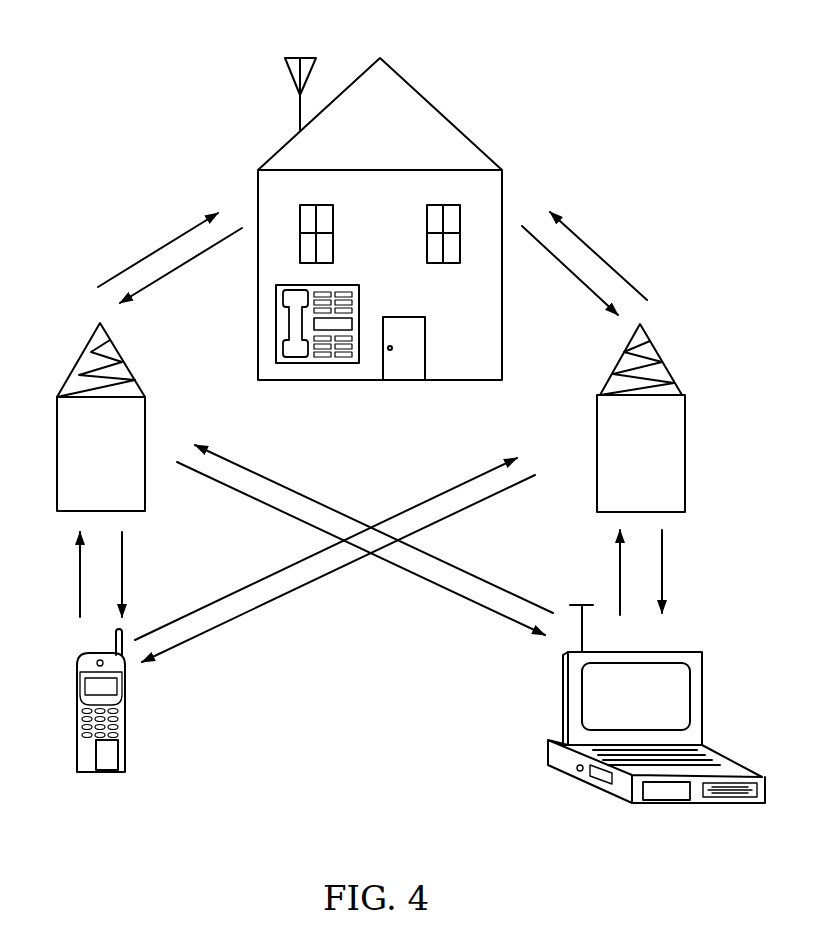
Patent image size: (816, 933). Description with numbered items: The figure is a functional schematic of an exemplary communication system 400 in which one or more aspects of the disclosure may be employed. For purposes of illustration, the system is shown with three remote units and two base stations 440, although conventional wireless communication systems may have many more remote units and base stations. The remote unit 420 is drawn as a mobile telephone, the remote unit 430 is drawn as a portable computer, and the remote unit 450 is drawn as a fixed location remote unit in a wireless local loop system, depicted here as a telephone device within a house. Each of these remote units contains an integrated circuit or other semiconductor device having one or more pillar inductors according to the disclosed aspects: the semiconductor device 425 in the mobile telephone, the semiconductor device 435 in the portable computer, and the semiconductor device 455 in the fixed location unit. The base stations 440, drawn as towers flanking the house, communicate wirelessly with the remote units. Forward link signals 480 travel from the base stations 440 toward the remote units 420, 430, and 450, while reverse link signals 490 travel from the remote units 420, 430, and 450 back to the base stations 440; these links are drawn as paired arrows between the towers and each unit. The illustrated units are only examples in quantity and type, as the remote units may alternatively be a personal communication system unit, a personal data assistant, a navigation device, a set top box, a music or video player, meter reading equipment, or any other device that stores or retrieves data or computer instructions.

The communication system 400 is at (622, 82).
The remote unit 420 is at (82, 660).
The integrated circuit or other semiconductor device 425 is at (110, 760).
The remote unit 430 is at (683, 650).
The integrated circuit or other semiconductor device 435 is at (672, 790).
The base station 440 is at (82, 360).
The remote unit 450 is at (276, 340).
The integrated circuit or other semiconductor device 455 is at (340, 322).
The forward link signals 480 is at (163, 245).
The reverse link signals 490 is at (168, 275).